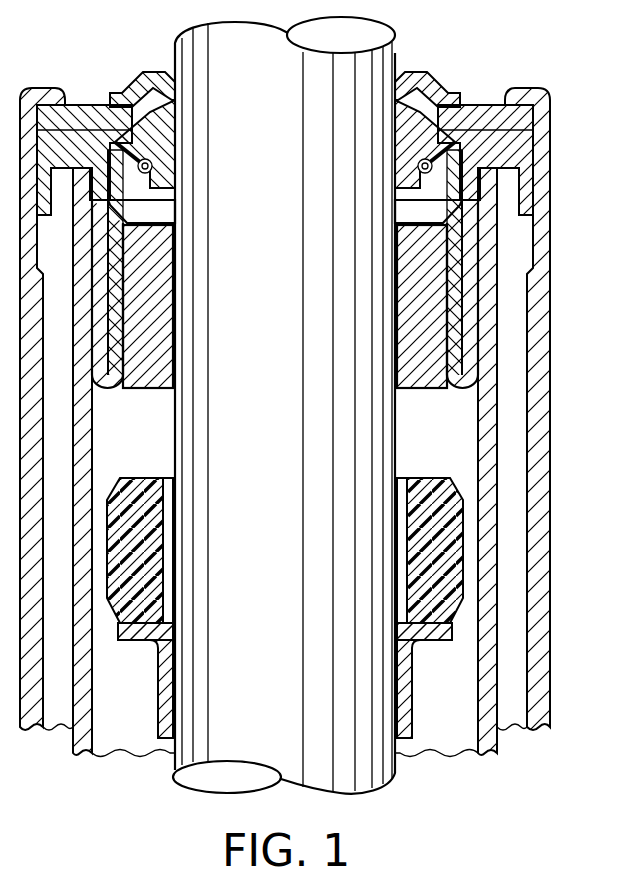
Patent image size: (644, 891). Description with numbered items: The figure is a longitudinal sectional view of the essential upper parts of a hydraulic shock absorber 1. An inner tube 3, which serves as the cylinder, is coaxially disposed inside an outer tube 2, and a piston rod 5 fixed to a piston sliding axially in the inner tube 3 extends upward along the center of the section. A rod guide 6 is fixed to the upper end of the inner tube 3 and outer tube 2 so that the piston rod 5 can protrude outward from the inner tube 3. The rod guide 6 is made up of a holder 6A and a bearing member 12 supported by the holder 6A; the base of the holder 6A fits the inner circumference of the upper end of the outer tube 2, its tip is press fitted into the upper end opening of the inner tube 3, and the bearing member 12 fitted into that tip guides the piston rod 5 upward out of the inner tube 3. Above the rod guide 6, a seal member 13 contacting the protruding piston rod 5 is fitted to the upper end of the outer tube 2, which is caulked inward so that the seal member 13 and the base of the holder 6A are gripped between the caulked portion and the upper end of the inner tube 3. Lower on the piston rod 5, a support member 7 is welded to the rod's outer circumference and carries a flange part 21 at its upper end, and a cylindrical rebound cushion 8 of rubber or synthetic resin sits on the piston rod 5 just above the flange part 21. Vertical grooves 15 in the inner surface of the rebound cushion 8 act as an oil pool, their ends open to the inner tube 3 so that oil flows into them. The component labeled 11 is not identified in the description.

The hydraulic shock absorber 1 is at (487, 95).
The outer tube 2 is at (537, 377).
The inner tube 3 is at (487, 413).
The piston rod 5 is at (383, 445).
The rod guide 6 is at (134, 396).
The holder 6A is at (475, 233).
The support member 7 is at (410, 680).
The rebound cushion 8 is at (455, 555).
The yoke 11 is at (433, 327).
The bearing member 12 is at (423, 262).
The seal member 13 is at (530, 122).
The vertical grooves 15 is at (402, 507).
The flange part 21 is at (450, 628).